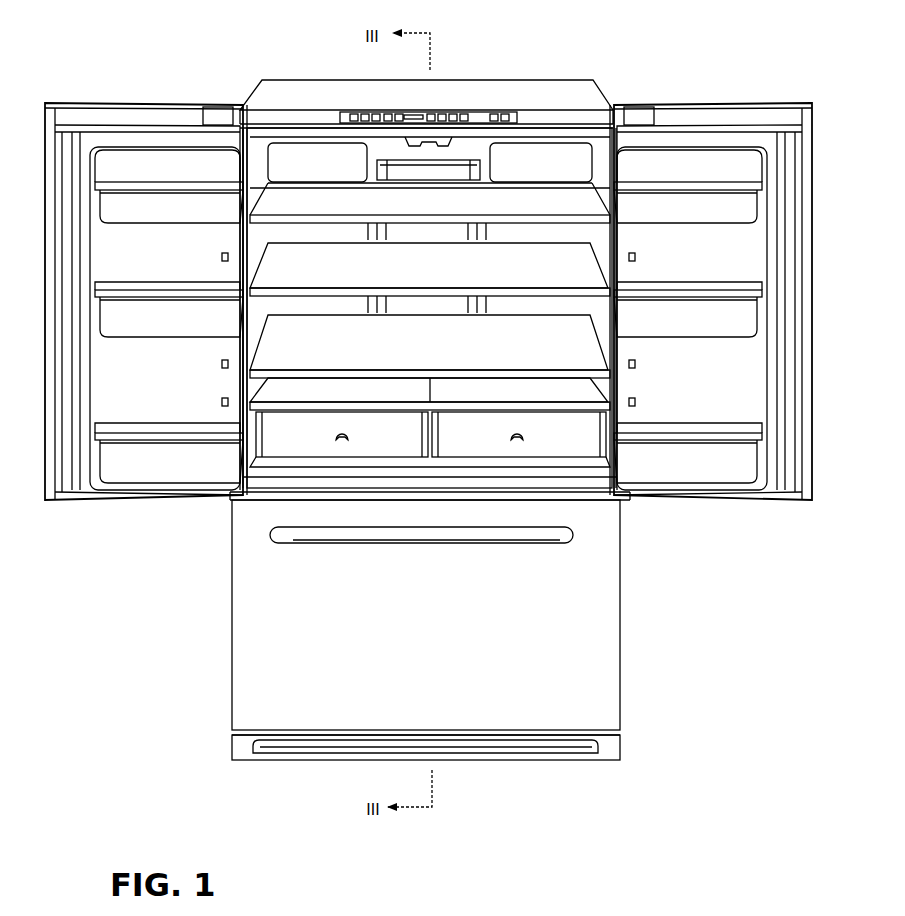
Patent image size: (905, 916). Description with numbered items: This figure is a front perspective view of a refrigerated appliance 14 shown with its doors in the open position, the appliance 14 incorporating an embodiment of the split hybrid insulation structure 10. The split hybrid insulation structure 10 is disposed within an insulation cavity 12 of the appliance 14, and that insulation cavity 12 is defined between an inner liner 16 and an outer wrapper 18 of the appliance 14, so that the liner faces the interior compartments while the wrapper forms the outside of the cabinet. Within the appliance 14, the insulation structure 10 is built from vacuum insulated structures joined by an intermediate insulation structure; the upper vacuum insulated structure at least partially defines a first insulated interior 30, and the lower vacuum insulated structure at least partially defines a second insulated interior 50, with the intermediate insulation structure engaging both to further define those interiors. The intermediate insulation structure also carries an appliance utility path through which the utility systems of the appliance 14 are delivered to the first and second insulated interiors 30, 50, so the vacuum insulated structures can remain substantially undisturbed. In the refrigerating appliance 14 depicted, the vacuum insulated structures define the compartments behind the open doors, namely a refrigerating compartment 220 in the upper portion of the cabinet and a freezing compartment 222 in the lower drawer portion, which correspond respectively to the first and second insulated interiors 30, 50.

The split hybrid insulation structure 10 is at (544, 157).
The insulation cavity 12 is at (297, 118).
The appliance 14 is at (201, 567).
The inner liner 16 is at (550, 302).
The outer wrapper 18 is at (527, 100).
The first insulated interior 30 is at (496, 164).
The second insulated interior 50 is at (561, 650).
The refrigerating compartment 220 is at (291, 236).
The freezing compartment 222 is at (298, 650).